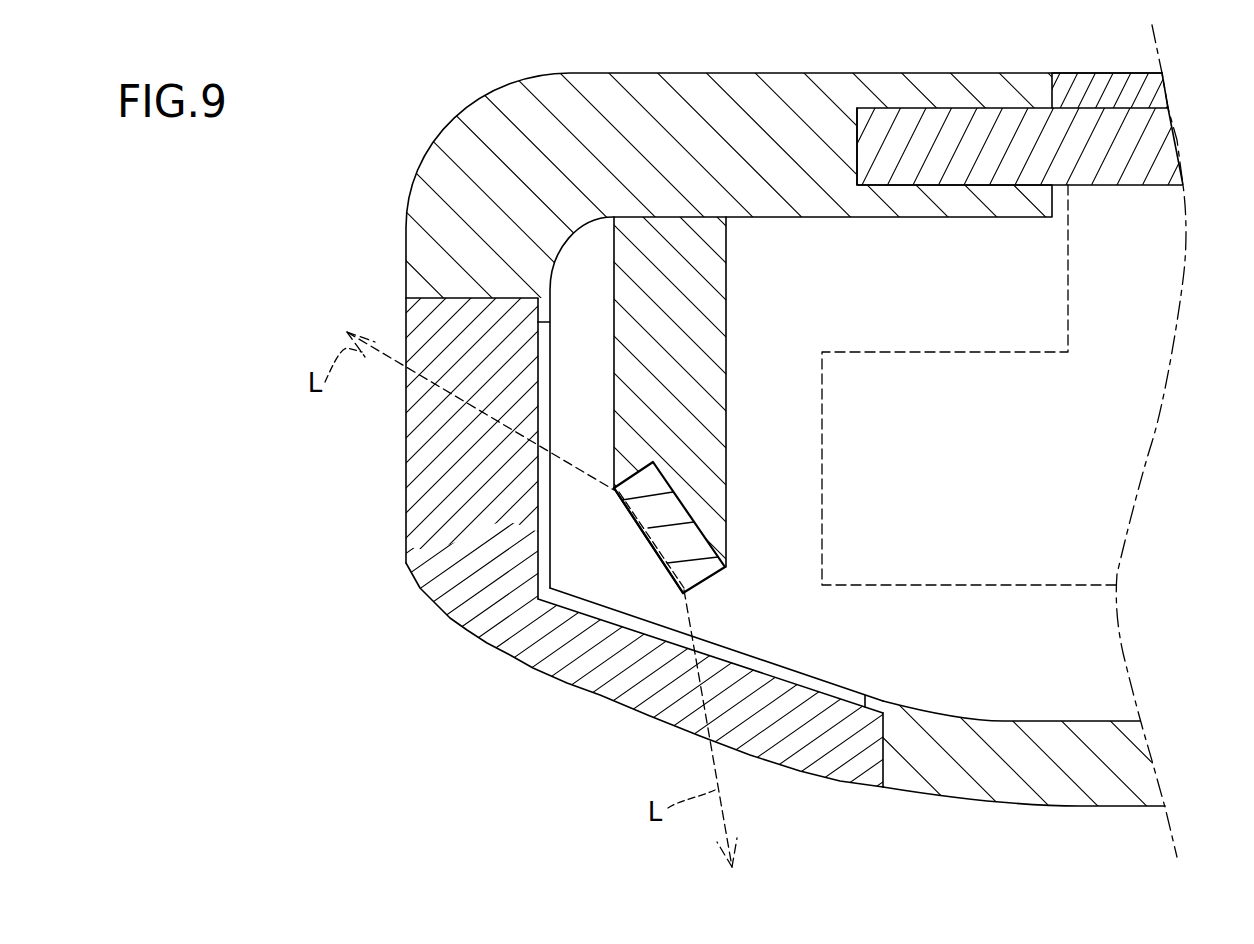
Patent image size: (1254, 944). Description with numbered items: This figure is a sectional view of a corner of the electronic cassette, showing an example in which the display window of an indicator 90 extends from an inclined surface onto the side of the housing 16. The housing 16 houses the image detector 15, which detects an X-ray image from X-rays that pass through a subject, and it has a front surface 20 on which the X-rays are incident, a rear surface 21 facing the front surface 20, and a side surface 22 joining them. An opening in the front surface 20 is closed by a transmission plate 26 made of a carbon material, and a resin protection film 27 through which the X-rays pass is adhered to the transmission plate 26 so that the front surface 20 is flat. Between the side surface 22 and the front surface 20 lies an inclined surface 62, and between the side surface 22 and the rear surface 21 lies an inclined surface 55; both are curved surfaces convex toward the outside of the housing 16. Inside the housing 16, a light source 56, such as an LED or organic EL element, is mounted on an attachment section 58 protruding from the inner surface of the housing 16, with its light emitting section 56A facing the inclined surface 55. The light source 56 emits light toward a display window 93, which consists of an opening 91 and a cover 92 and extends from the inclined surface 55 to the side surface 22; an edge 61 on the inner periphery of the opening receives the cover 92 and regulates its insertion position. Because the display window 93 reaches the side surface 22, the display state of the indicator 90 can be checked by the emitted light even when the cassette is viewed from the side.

The image detector 15 is at (977, 352).
The housing 16 is at (675, 472).
The front surface 20 is at (1107, 73).
The rear surface 21 is at (1143, 808).
The side surface 22 is at (627, 472).
The transmission plate 26 is at (1172, 148).
The protection film 27 is at (1165, 85).
The inclined surface 55 is at (884, 787).
The light source 56 is at (688, 549).
The light emitting section 56A is at (652, 546).
The attachment section 58 is at (720, 283).
The edge 61 is at (872, 699).
The inclined surface 62 is at (452, 122).
The indicator 90 is at (627, 472).
The opening 91 is at (548, 532).
The cover 92 is at (462, 605).
The display window 93 is at (627, 472).